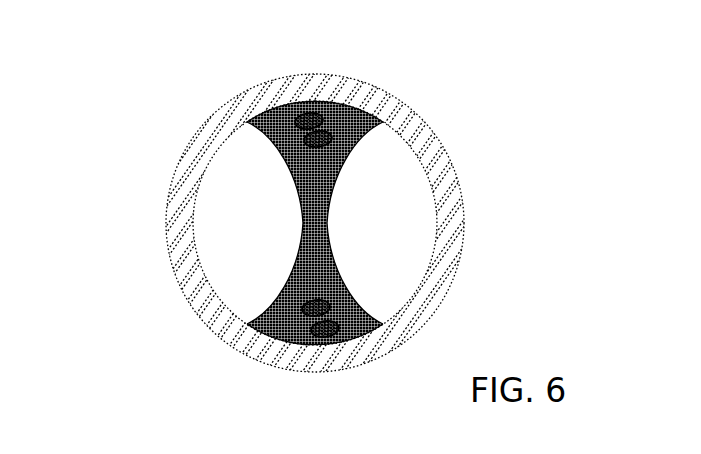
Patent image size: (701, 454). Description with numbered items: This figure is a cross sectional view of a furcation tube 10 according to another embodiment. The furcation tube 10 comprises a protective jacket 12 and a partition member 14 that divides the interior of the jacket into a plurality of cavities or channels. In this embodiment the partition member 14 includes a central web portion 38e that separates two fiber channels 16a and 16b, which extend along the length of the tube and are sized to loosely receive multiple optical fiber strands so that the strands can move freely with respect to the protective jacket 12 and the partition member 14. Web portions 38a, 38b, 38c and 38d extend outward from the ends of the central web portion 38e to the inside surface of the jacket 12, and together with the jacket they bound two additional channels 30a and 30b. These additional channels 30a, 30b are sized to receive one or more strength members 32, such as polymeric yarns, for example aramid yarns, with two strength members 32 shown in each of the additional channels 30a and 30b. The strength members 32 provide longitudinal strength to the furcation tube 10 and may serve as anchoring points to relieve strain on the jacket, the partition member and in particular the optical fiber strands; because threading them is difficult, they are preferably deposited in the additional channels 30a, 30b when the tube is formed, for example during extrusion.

The furcation tube 10 is at (374, 54).
The protective jacket 12 is at (436, 133).
The partition member 14 is at (254, 297).
The channel 16a is at (227, 258).
The channel 16b is at (415, 230).
The additional channel 30a is at (284, 122).
The additional channel 30b is at (292, 320).
The strength member 32 is at (312, 115).
The web portion 38a is at (268, 137).
The web portion 38b is at (373, 150).
The web portion 38c is at (362, 312).
The web portion 38d is at (271, 329).
The central web portion 38e is at (330, 222).